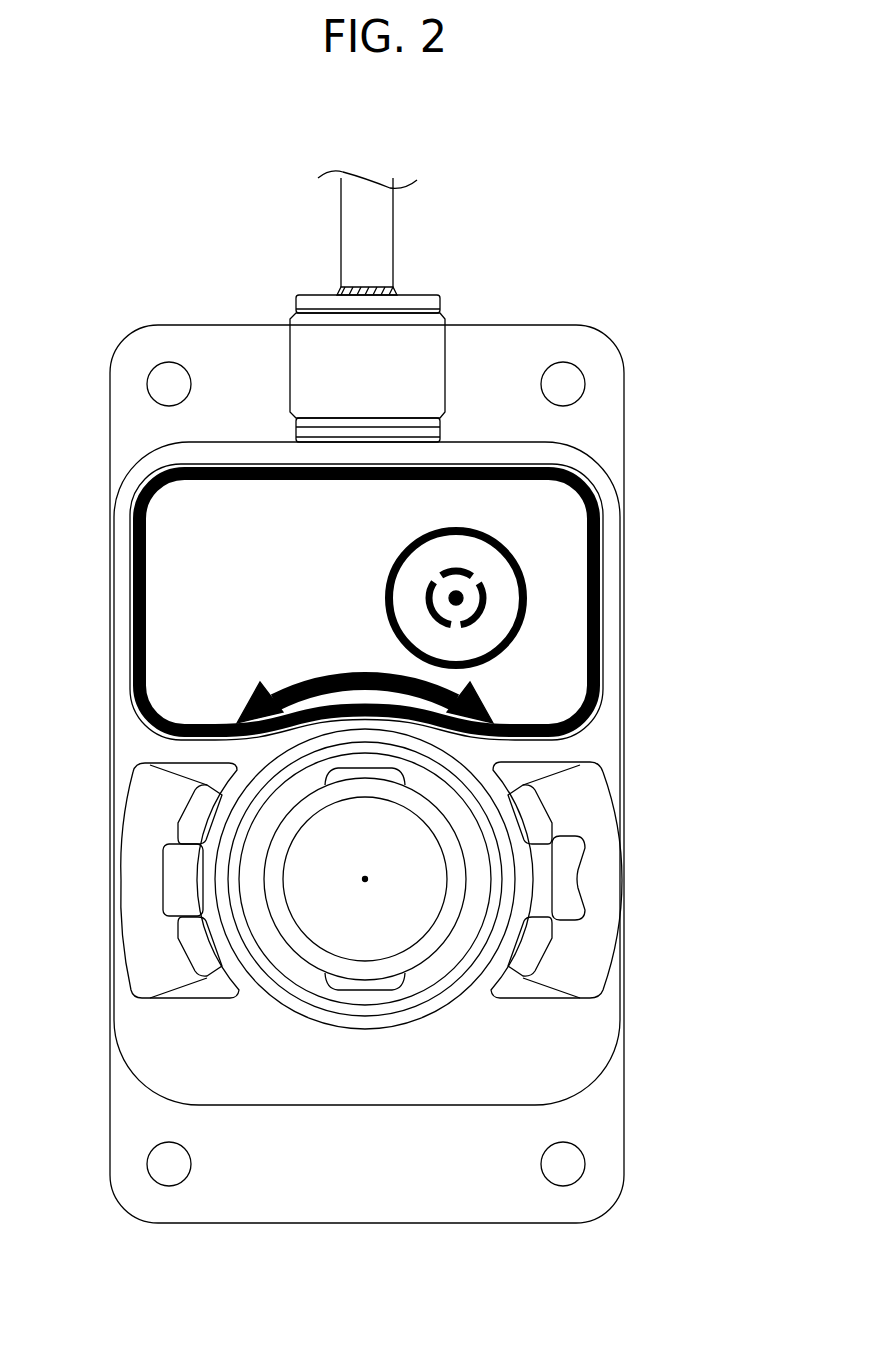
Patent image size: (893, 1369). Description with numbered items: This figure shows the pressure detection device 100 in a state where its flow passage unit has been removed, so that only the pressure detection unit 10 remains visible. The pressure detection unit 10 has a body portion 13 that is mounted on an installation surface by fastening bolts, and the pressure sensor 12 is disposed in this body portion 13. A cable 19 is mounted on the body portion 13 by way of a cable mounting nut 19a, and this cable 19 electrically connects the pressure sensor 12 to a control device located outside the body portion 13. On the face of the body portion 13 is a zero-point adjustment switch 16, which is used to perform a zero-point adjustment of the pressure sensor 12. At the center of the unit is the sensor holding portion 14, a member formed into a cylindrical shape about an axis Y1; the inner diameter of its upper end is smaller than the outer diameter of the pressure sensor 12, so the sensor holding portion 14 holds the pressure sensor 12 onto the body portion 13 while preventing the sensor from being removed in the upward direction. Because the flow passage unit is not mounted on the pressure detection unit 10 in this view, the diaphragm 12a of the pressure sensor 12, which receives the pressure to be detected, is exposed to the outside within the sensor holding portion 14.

The pressure detection device 100 is at (658, 214).
The pressure detection unit 10 is at (105, 500).
The body portion 13 is at (624, 663).
The cable 19 is at (393, 233).
The cable mounting nut 19a is at (445, 345).
The zero-point adjustment switch 16 is at (480, 532).
The sensor holding portion 14 is at (370, 985).
The pressure sensor 12 is at (400, 958).
The diaphragm 12a is at (407, 932).
The axis Y1 is at (368, 879).